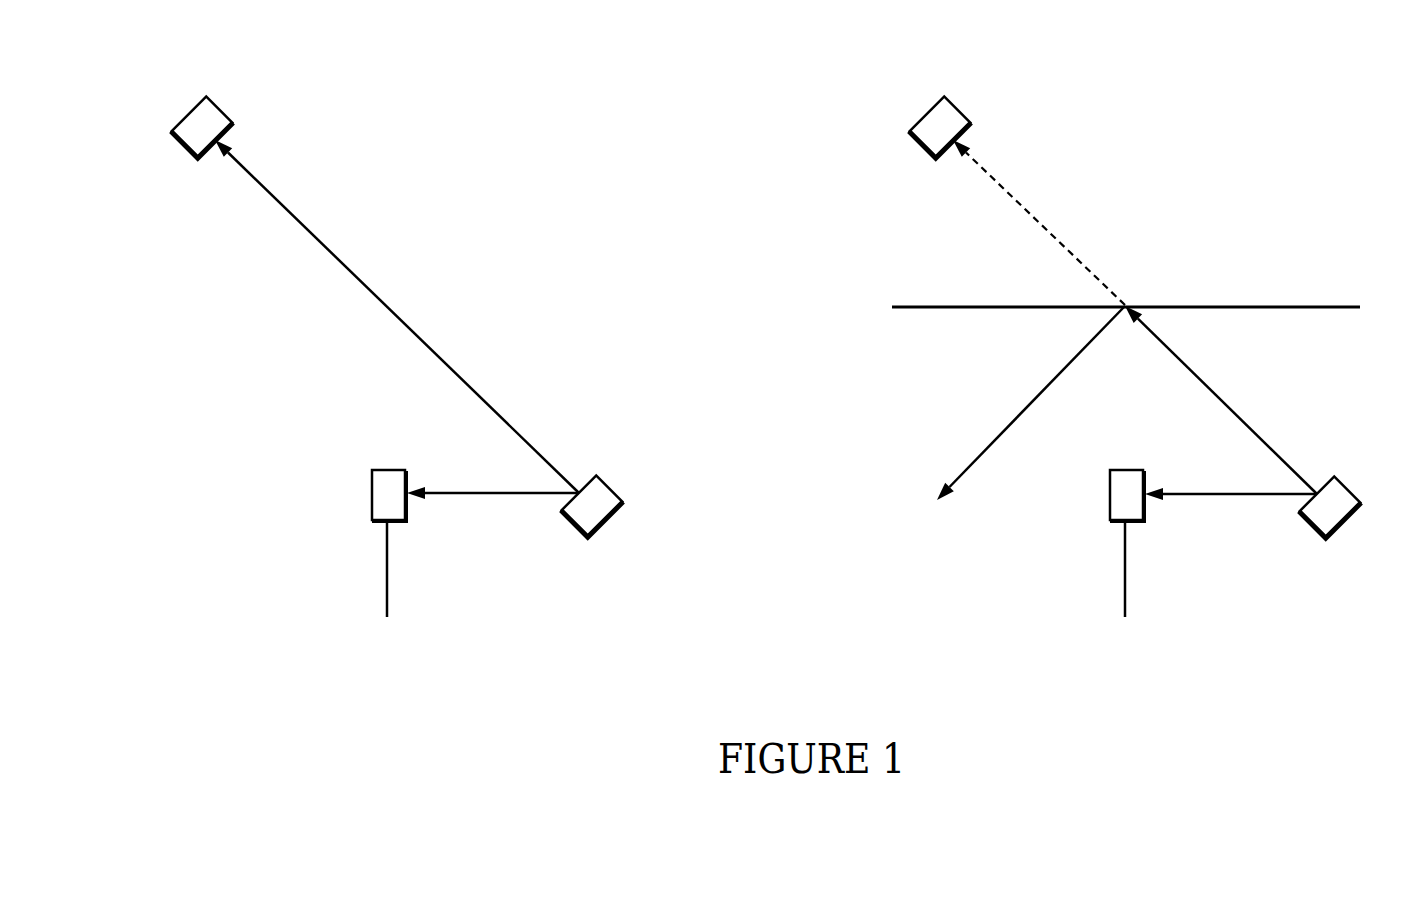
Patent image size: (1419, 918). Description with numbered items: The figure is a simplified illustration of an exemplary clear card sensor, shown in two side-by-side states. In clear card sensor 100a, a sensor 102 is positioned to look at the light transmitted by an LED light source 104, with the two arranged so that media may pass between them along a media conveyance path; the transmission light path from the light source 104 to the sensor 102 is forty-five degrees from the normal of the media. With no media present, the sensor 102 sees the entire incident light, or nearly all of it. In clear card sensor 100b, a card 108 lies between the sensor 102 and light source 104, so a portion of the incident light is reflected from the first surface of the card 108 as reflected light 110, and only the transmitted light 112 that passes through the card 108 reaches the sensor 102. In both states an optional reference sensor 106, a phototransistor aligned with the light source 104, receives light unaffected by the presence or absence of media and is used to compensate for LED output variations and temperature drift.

The clear card sensor 100a is at (481, 156).
The clear card sensor 100b is at (1240, 150).
The sensor 102 is at (190, 112).
The LED light source 104 is at (574, 525).
The reference sensor 106 is at (372, 495).
The card 108 is at (1292, 305).
The reflected light 110 is at (1032, 400).
The transmitted light 112 is at (1036, 220).